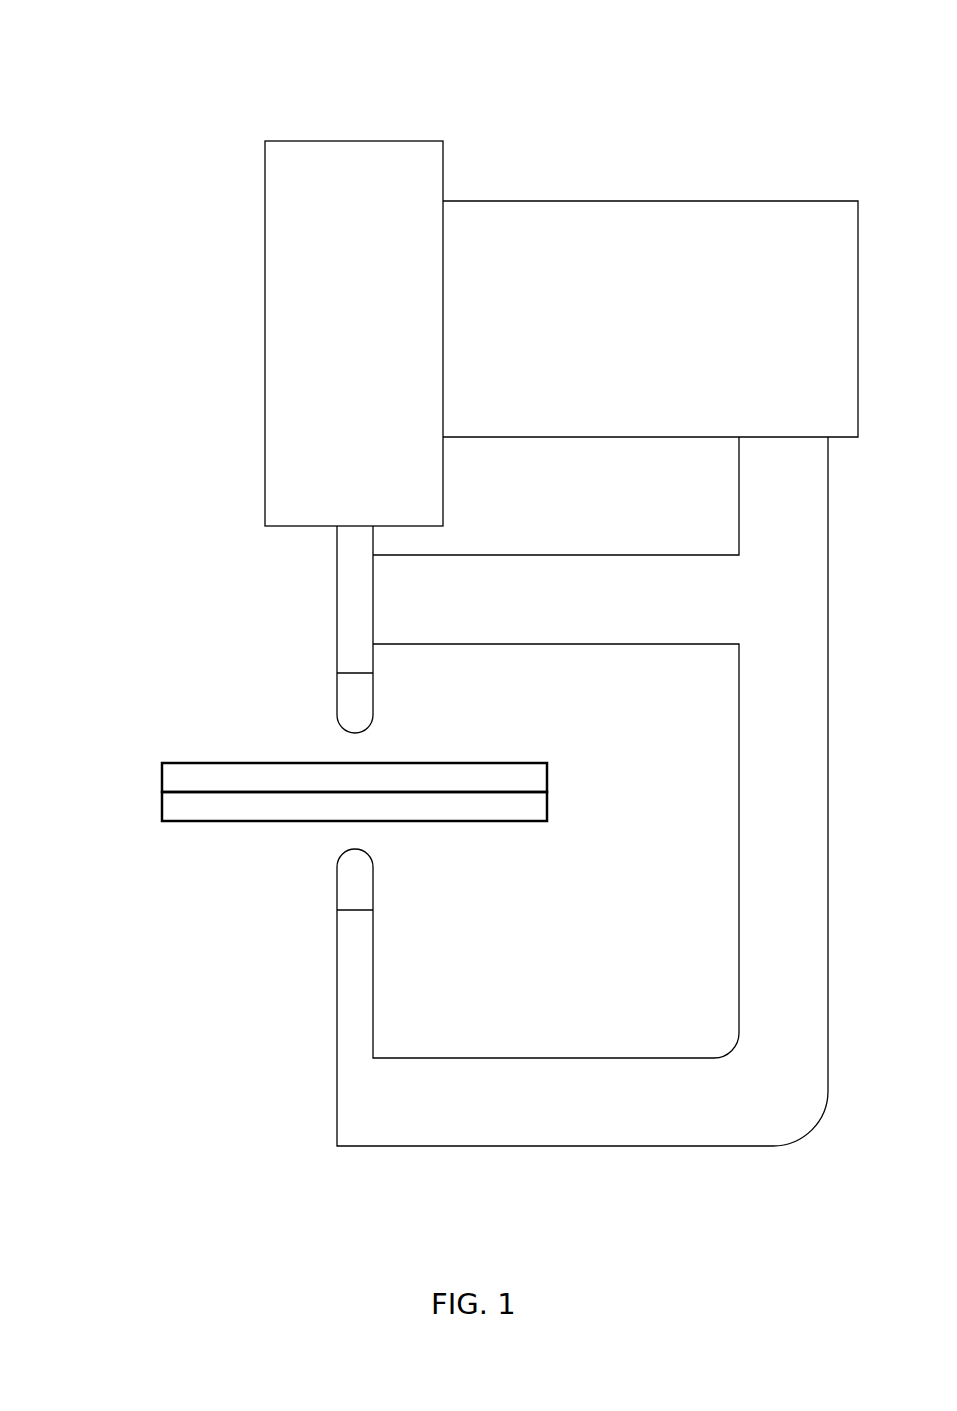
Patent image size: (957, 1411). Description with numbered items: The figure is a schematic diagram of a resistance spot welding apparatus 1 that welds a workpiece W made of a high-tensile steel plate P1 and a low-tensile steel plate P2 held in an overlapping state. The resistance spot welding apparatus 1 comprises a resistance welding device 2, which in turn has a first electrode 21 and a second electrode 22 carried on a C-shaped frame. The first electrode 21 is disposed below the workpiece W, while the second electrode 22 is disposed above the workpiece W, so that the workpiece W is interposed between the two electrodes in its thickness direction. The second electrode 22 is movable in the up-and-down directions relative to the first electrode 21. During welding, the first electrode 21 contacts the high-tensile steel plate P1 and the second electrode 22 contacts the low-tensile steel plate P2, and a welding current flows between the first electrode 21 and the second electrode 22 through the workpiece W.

The resistance spot welding apparatus 1 is at (167, 100).
The resistance welding device 2 is at (235, 323).
The first electrode 21 is at (365, 882).
The second electrode 22 is at (366, 697).
The workpiece W is at (155, 718).
The high-tensile steel plate P1 is at (175, 811).
The low-tensile steel plate P2 is at (175, 779).